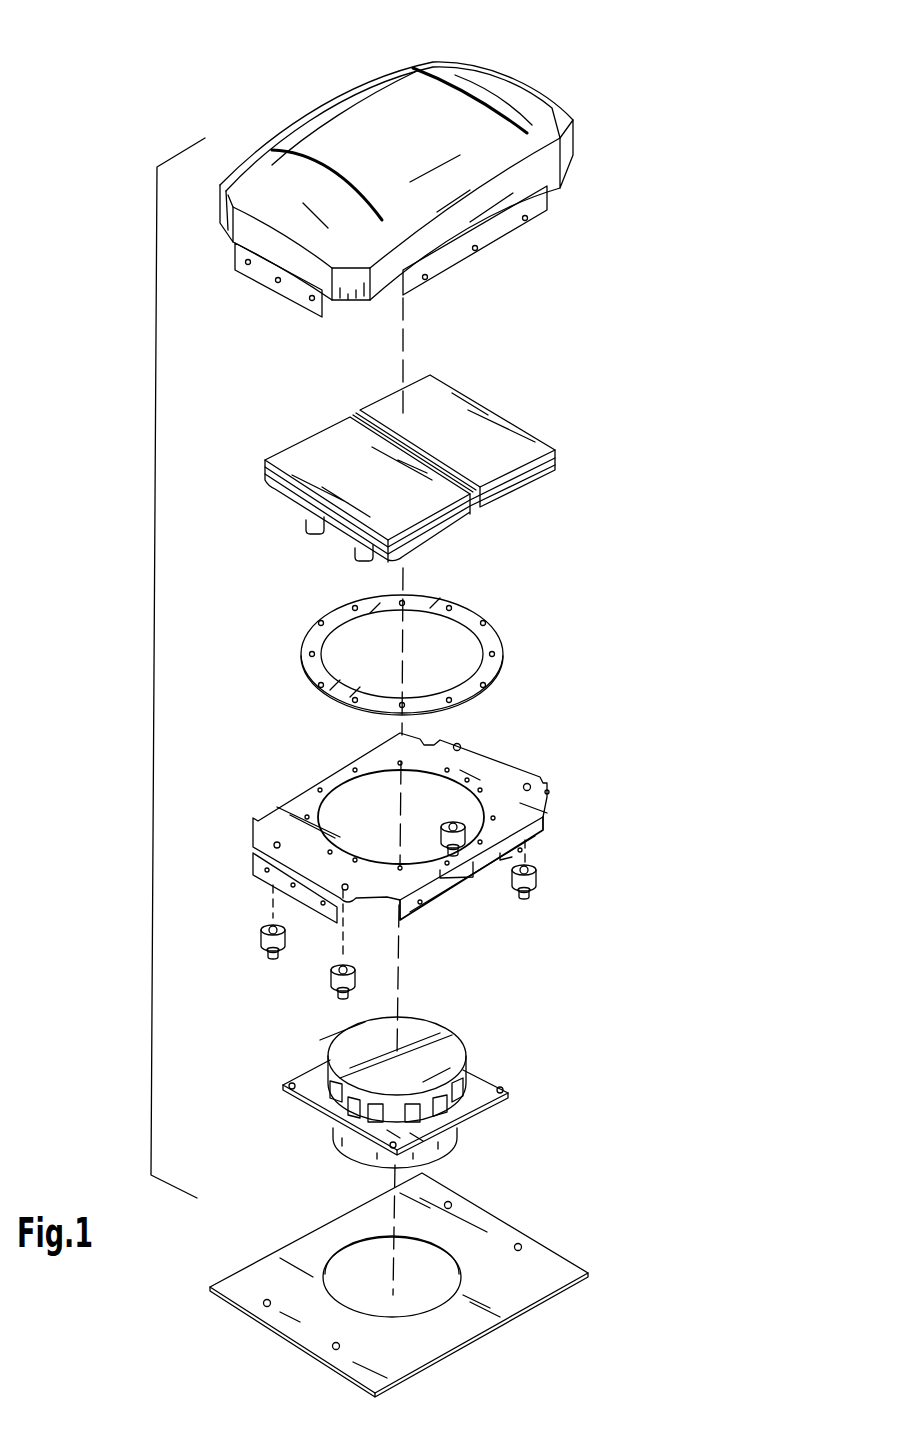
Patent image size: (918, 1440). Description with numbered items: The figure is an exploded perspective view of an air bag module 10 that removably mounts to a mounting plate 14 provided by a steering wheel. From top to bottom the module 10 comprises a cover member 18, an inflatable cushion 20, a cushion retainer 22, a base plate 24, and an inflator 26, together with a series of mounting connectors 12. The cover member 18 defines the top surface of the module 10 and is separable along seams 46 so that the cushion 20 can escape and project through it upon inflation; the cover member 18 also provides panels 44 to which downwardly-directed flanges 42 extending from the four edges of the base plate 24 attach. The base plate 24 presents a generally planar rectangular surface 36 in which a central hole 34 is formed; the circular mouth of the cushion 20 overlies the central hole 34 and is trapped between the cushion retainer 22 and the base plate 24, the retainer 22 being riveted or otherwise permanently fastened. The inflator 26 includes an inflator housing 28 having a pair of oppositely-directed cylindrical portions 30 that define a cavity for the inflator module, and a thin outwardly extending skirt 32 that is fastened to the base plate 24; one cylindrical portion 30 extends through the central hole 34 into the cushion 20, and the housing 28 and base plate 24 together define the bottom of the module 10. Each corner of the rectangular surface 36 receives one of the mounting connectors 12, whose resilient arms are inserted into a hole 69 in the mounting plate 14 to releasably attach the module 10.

The air bag module 10 is at (152, 700).
The mounting connectors 12 is at (457, 820).
The mounting plate 14 is at (399, 1285).
The cover member 18 is at (397, 183).
The inflatable cushion 20 is at (493, 425).
The cushion retainer 22 is at (488, 635).
The base plate 24 is at (415, 857).
The inflator 26 is at (407, 1066).
The inflator housing 28 is at (417, 1032).
The cylindrical portions 30 is at (387, 1142).
The skirt 32 is at (478, 1076).
The central hole 34 is at (363, 810).
The rectangular surface 36 is at (518, 808).
The flanges 42 is at (273, 877).
The panels 44 is at (292, 290).
The seams 46 is at (303, 153).
The hole 69 is at (521, 1244).